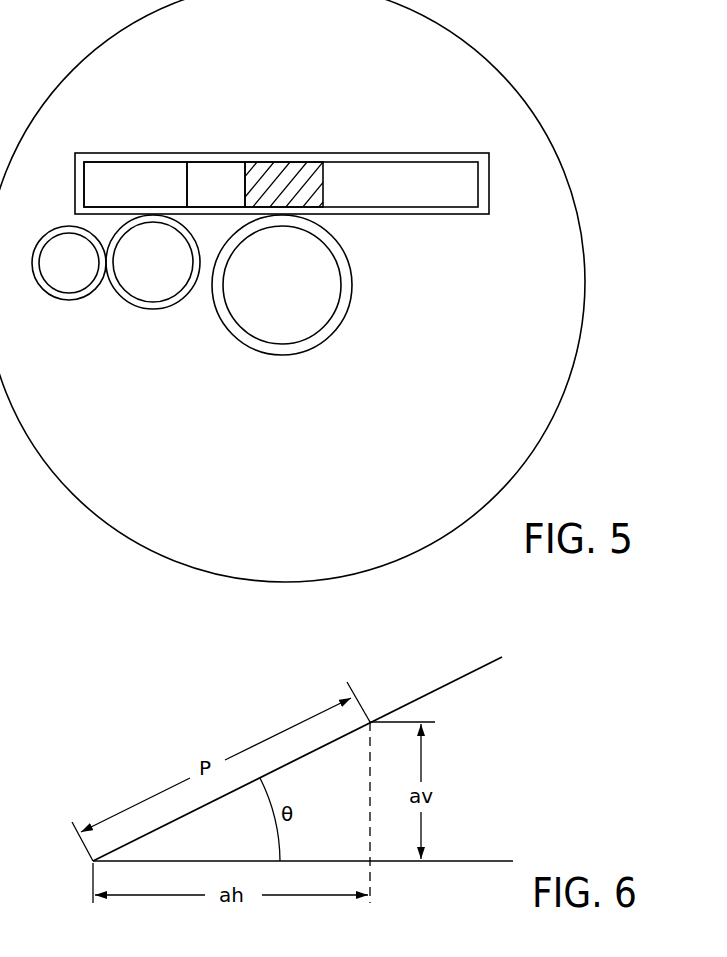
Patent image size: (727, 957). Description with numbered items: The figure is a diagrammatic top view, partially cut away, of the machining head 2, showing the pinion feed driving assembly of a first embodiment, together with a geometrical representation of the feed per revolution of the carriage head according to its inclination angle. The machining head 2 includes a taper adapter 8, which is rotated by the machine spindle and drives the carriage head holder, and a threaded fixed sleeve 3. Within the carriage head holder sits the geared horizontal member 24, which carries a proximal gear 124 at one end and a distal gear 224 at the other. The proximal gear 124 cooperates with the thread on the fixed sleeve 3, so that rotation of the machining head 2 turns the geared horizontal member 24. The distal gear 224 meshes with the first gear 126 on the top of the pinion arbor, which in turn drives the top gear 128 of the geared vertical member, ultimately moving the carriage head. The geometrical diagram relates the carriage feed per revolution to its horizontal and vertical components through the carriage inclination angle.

The machining head 2 is at (557, 327).
The fixed sleeve 3 is at (352, 277).
The taper adapter 8 is at (322, 310).
The geared horizontal member 24 is at (218, 170).
The proximal gear 124 is at (295, 168).
The distal gear 224 is at (120, 170).
The first gear 126 is at (152, 288).
The top gear 128 is at (60, 278).